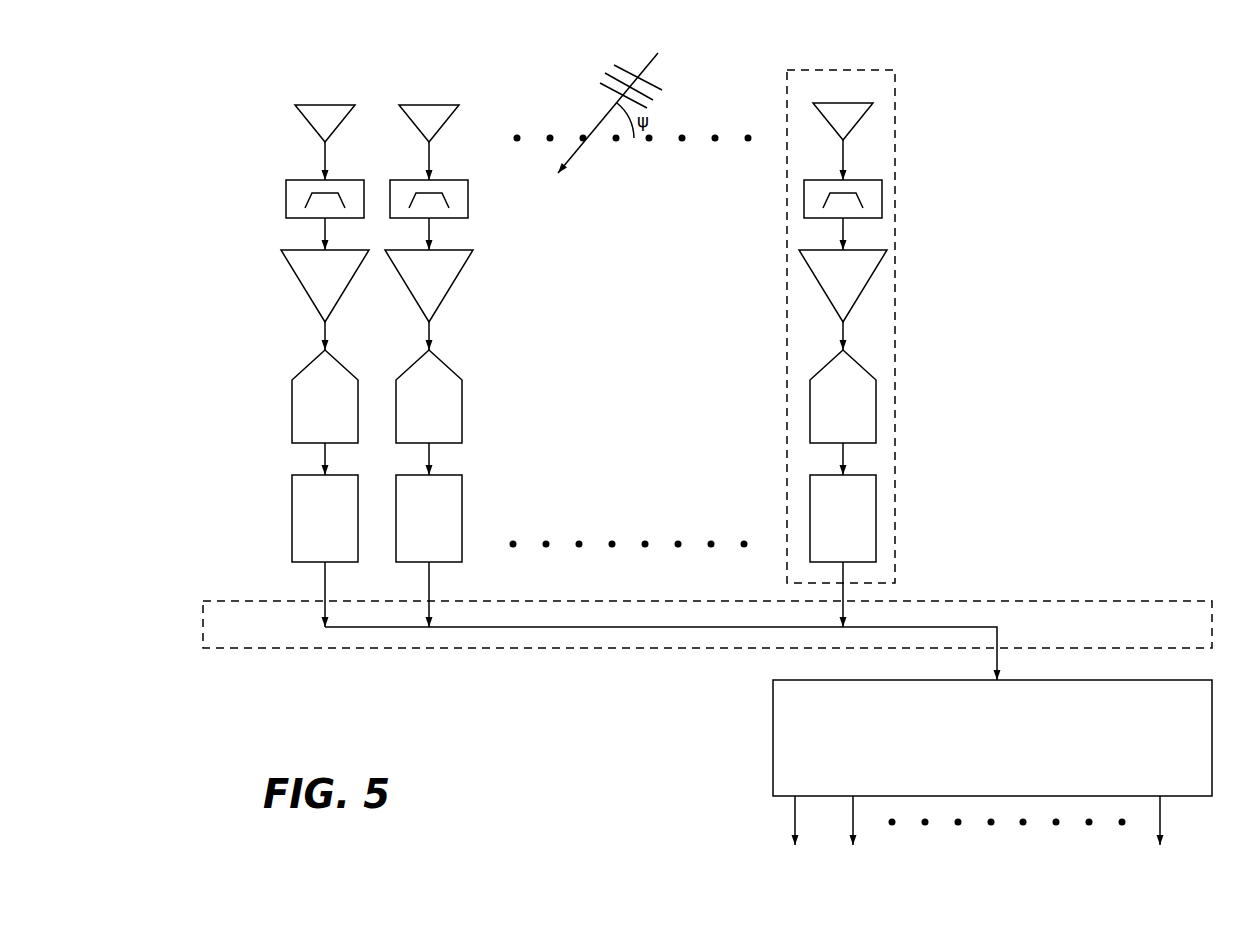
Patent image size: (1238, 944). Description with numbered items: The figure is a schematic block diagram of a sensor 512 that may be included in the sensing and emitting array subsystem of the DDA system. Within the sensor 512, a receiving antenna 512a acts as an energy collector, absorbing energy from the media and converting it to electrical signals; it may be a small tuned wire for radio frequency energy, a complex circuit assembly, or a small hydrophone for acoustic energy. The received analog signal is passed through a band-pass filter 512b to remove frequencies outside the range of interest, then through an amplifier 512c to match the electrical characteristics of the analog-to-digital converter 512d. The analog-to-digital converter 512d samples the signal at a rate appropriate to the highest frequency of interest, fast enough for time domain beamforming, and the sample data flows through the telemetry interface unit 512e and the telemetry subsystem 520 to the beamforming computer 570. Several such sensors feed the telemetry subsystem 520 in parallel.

The sensor 512 is at (873, 66).
The receiving antenna 512a is at (862, 122).
The band-pass filter 512b is at (881, 197).
The amplifier 512c is at (867, 288).
The analog-to-digital converter 512d is at (877, 381).
The telemetry interface unit 512e is at (877, 495).
The telemetry subsystem 520 is at (615, 650).
The beamforming computer 570 is at (773, 712).